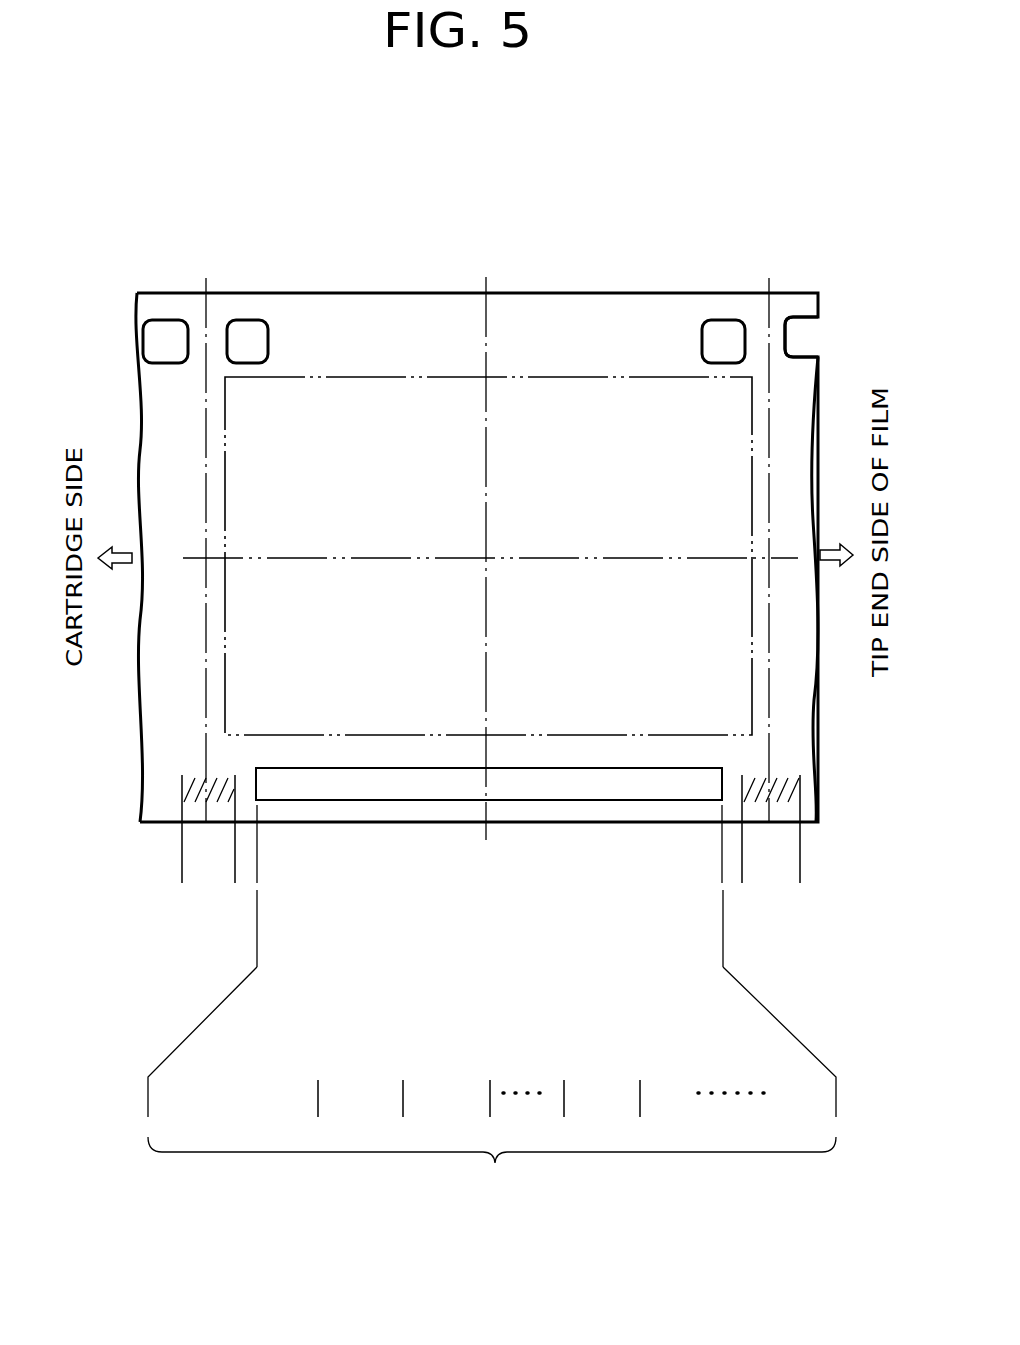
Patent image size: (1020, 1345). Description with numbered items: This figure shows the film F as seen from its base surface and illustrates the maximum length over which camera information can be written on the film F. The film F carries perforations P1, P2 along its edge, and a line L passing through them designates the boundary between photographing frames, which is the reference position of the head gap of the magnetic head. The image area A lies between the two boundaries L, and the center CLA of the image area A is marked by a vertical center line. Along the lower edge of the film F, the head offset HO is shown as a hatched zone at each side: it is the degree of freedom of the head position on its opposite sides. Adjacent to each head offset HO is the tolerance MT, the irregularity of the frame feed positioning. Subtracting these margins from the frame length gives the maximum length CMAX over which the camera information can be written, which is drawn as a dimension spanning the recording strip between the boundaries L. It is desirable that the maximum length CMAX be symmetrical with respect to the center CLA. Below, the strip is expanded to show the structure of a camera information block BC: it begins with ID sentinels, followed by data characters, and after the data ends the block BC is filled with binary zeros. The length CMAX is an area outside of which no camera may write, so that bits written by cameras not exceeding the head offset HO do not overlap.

The film F is at (598, 292).
The perforation P1 is at (153, 320).
The perforation P2 is at (237, 320).
The boundary between photographing frames L is at (484, 537).
The center of the image area CLA is at (490, 545).
The image area (frame) A is at (567, 378).
The maximum length over which camera information can be written CMAX is at (723, 910).
The head offset HO is at (235, 872).
The irregularity of the frame feed positioning MT is at (308, 872).
The camera information block BC is at (492, 1097).